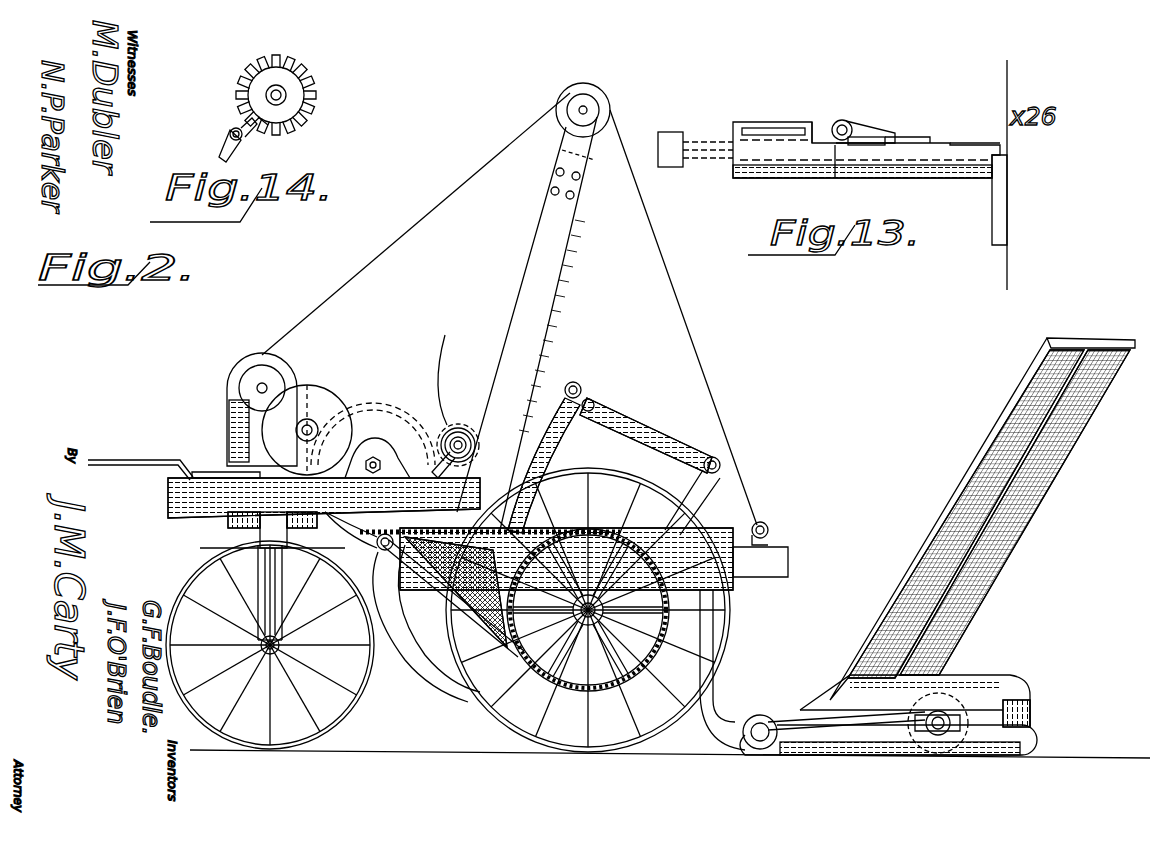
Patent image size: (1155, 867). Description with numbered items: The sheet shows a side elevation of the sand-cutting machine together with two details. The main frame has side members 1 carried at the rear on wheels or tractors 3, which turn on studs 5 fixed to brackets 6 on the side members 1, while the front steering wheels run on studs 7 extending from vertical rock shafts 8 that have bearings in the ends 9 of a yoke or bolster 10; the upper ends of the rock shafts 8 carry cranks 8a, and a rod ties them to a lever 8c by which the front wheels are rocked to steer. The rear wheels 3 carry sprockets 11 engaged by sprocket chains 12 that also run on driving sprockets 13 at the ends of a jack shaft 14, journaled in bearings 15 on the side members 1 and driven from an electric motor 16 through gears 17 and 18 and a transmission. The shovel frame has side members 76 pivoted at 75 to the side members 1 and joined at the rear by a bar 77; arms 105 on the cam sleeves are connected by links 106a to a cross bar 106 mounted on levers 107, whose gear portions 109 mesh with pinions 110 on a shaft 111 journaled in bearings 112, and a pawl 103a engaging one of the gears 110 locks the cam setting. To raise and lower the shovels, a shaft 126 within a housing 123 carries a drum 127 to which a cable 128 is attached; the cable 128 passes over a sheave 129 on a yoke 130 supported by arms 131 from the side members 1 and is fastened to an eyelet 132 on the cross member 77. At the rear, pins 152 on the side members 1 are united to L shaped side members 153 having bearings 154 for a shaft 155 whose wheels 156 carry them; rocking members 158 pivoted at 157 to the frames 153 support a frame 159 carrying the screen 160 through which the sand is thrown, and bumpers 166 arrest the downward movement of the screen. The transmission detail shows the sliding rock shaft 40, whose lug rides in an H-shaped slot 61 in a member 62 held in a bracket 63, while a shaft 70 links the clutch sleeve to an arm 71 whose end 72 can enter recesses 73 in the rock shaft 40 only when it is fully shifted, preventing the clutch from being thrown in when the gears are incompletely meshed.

In FIG. 2, the side members 1 is at (183, 508).
In FIG. 2, the rear wheels or tractors 3 is at (465, 702).
In FIG. 2, the studs 5 is at (575, 690).
In FIG. 2, the brackets 6 is at (612, 545).
In FIG. 2, the studs 7 is at (268, 660).
In FIG. 2, the vertical rock shafts 8 is at (262, 595).
In FIG. 2, the cranks 8a is at (284, 580).
In FIG. 2, the lever 8c is at (115, 465).
In FIG. 2, the ends of yoke or bolster 9 is at (262, 565).
In FIG. 2, the yoke or bolster 10 is at (255, 532).
In FIG. 2, the sprockets 11 is at (545, 640).
In FIG. 2, the sprocket chains 12 is at (440, 600).
In FIG. 2, the driving sprockets 13 is at (400, 560).
In FIG. 2, the jack shaft 14 is at (282, 600).
In FIG. 2, the bearings 15 is at (375, 540).
In FIG. 2, the electric motor 16 is at (290, 370).
In FIG. 2, the gear 17 is at (318, 395).
In FIG. 2, the gear 18 is at (372, 410).
In FIG. 13, the sliding rock shaft 40 is at (694, 135).
In FIG. 13, the H-shaped slot 61 is at (775, 128).
In FIG. 13, the member 62 is at (812, 122).
In FIG. 13, the bracket 63 is at (790, 182).
In FIG. 13, the shaft 70 is at (845, 121).
In FIG. 13, the arm 71 is at (870, 133).
In FIG. 13, the end of arm 72 is at (900, 138).
In FIG. 13, the recesses 73 is at (958, 143).
In FIG. 2, the pivot 75 is at (374, 455).
In FIG. 2, the side members 76 is at (620, 770).
In FIG. 2, the bar 77 is at (790, 540).
In FIG. 14, the pawl 103a is at (226, 145).
In FIG. 2, the pawl 103a is at (455, 360).
In FIG. 2, the arms 105 is at (722, 465).
In FIG. 2, the cross bar 106 is at (590, 398).
In FIG. 2, the links 106a is at (645, 428).
In FIG. 2, the levers 107 is at (574, 382).
In FIG. 2, the gear portions 109 is at (555, 445).
In FIG. 14, the pinions 110 is at (270, 125).
In FIG. 2, the pinions 110 is at (453, 435).
In FIG. 14, the shaft 111 is at (286, 95).
In FIG. 2, the bearings 112 is at (462, 424).
In FIG. 2, the housing 123 is at (226, 405).
In FIG. 2, the shaft 126 is at (230, 395).
In FIG. 2, the drum 127 is at (250, 380).
In FIG. 2, the cable 128 is at (440, 205).
In FIG. 2, the sheave 129 is at (568, 98).
In FIG. 2, the yoke 130 is at (572, 149).
In FIG. 2, the arms 131 is at (540, 238).
In FIG. 2, the eyelet 132 is at (770, 525).
In FIG. 2, the pins 152 is at (730, 605).
In FIG. 2, the L shaped side members 153 is at (720, 715).
In FIG. 2, the bearings 154 is at (940, 713).
In FIG. 2, the shaft 155 is at (935, 733).
In FIG. 2, the wheels 156 is at (915, 728).
In FIG. 2, the pivot 157 is at (755, 745).
In FIG. 2, the rocking members 158 is at (830, 735).
In FIG. 2, the frame 159 is at (1000, 414).
In FIG. 2, the screen 160 is at (1040, 437).
In FIG. 2, the bumpers 166 is at (1032, 714).